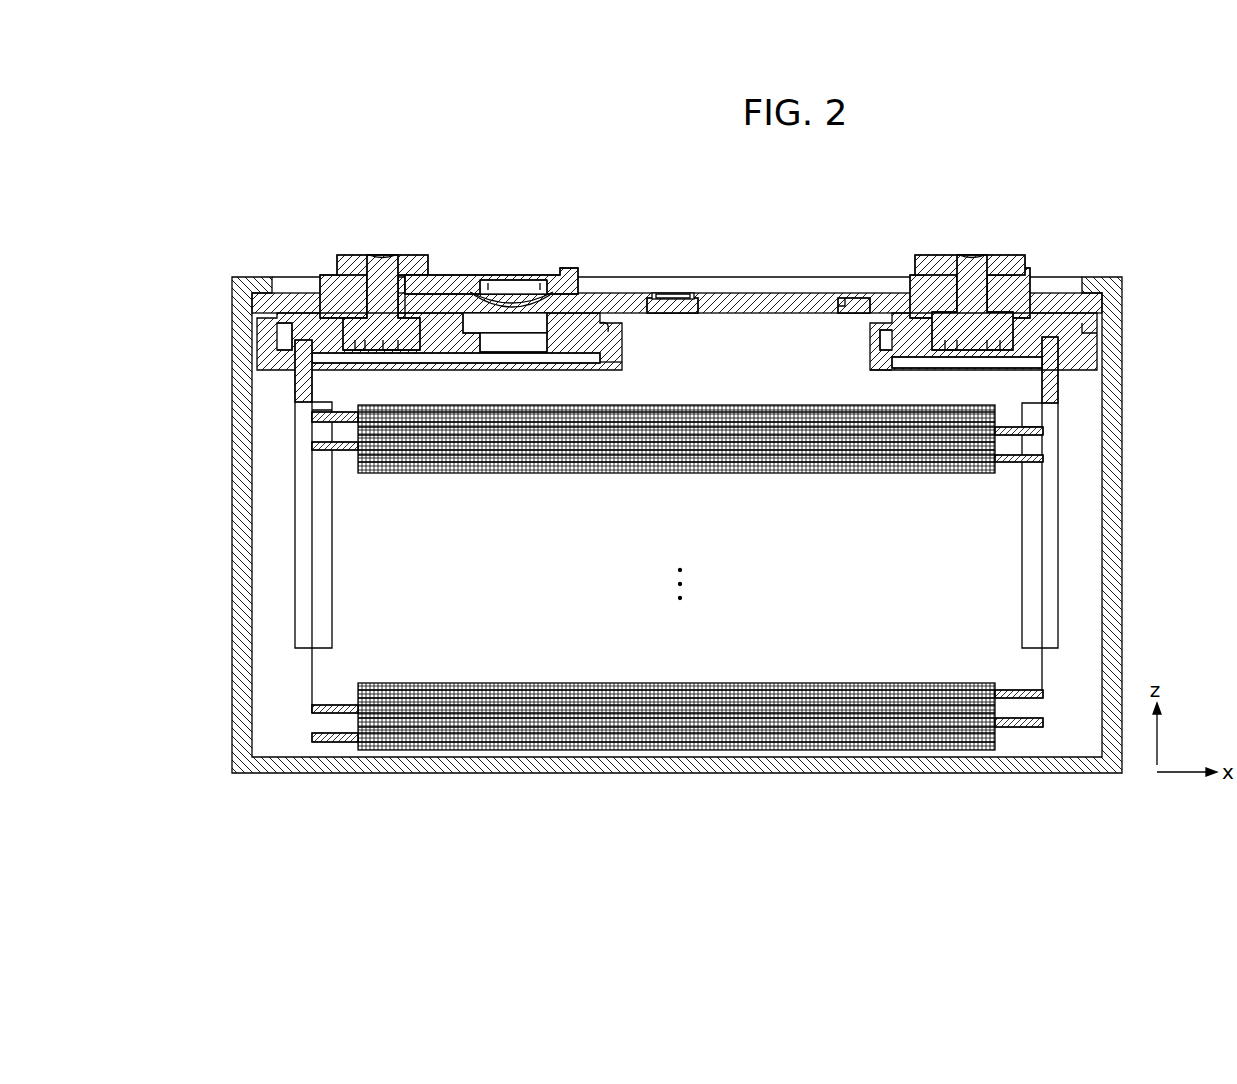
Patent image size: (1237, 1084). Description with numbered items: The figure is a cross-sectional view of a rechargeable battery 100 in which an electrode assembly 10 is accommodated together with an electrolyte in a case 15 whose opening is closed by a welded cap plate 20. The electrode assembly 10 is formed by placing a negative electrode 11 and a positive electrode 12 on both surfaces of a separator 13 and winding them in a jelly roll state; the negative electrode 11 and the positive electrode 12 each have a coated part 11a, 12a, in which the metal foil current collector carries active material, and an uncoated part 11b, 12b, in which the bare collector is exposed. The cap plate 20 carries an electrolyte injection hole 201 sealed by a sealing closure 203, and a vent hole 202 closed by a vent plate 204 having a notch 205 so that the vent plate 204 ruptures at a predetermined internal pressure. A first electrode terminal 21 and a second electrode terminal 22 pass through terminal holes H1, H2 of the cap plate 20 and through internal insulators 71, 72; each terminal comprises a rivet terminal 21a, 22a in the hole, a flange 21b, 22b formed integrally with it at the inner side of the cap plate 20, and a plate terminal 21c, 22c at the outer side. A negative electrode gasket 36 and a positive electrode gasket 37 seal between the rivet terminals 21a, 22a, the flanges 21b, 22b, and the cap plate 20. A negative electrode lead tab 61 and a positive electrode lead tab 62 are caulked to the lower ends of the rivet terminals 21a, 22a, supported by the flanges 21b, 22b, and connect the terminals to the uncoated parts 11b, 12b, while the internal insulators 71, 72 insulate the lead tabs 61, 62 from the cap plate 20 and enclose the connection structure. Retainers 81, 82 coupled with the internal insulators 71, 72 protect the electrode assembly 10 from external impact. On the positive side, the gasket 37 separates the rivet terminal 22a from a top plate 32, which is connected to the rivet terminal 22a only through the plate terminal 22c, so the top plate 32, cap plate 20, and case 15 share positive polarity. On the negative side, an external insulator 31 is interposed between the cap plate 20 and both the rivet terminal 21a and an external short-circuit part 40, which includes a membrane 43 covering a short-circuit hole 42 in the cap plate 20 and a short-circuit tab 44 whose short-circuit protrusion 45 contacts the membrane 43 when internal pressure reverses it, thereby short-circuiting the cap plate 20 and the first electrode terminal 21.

The rechargeable battery 100 is at (672, 162).
The electrode assembly 10 is at (681, 637).
The negative electrode 11 is at (392, 640).
The coated part 11a is at (453, 745).
The uncoated part 11b is at (335, 633).
The positive electrode 12 is at (978, 648).
The coated part 12a is at (930, 730).
The uncoated part 12b is at (1023, 640).
The separator 13 is at (652, 742).
The case 15 is at (1110, 470).
The cap plate 20 is at (780, 298).
The electrolyte injection hole 201 is at (845, 316).
The vent hole 202 is at (675, 314).
The sealing closure 203 is at (858, 296).
The vent plate 204 is at (690, 292).
The notch 205 is at (655, 296).
The first electrode terminal 21 is at (342, 252).
The rivet terminal 21a is at (383, 340).
The flange 21b is at (414, 318).
The plate terminal 21c is at (408, 262).
The second electrode terminal 22 is at (971, 350).
The rivet terminal 22a is at (985, 366).
The flange 22b is at (943, 328).
The plate terminal 22c is at (1000, 262).
The external insulator 31 is at (572, 268).
The top plate 32 is at (1030, 270).
The negative electrode gasket 36 is at (325, 300).
The positive electrode gasket 37 is at (940, 270).
The external short-circuit part 40 is at (525, 380).
The short-circuit hole 42 is at (543, 316).
The membrane 43 is at (503, 314).
The short-circuit tab 44 is at (328, 268).
The short-circuit protrusion 45 is at (522, 312).
The negative electrode lead tab 61 is at (294, 476).
The positive electrode lead tab 62 is at (1058, 614).
The internal insulator 71 is at (275, 334).
The internal insulator 72 is at (1098, 328).
The retainer 81 is at (608, 370).
The retainer 82 is at (958, 372).
The terminal hole H1 is at (376, 284).
The terminal hole H2 is at (978, 262).